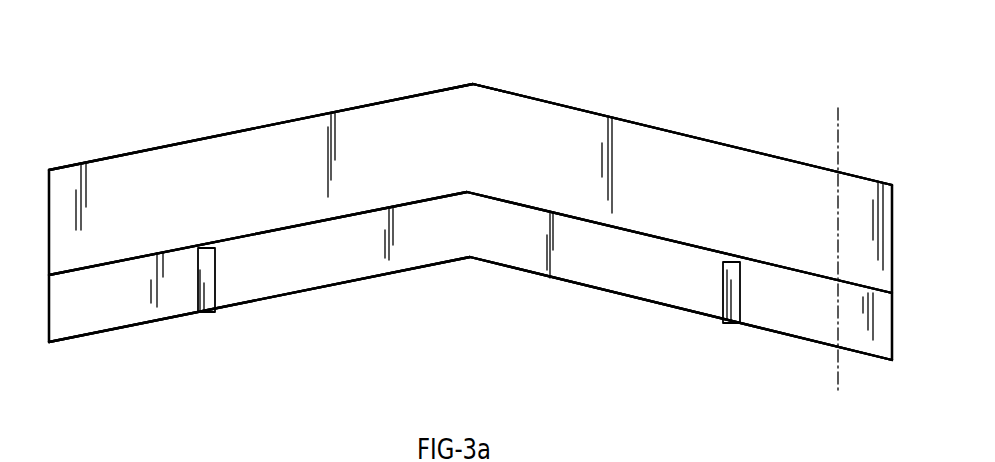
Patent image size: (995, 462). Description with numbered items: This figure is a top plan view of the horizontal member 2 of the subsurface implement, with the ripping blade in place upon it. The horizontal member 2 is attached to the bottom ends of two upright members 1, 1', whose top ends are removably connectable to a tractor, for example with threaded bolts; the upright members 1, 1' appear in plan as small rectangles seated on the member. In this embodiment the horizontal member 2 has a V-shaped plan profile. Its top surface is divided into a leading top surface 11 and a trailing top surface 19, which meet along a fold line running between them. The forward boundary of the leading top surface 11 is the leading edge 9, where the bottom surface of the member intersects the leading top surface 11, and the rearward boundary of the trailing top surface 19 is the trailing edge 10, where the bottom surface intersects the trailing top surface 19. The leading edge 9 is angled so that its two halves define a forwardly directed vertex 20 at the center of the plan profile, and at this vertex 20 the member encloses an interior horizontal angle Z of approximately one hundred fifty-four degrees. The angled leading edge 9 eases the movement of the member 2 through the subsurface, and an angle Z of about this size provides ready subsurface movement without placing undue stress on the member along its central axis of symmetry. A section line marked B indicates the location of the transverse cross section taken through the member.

The horizontal member 2 is at (298, 93).
The leading edge 9 is at (205, 138).
The forwardly directed vertex 20 is at (473, 84).
The interior horizontal angle Z is at (512, 98).
The leading top surface 11 is at (705, 201).
The trailing top surface 19 is at (652, 278).
The trailing edge 10 is at (587, 288).
The upright member 1' is at (191, 320).
The upright member 1 is at (725, 344).
The section line B- B is at (838, 108).